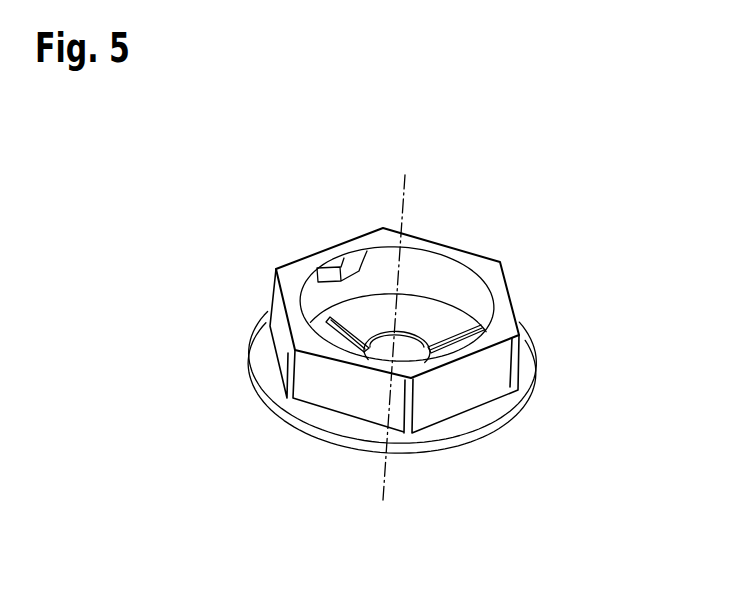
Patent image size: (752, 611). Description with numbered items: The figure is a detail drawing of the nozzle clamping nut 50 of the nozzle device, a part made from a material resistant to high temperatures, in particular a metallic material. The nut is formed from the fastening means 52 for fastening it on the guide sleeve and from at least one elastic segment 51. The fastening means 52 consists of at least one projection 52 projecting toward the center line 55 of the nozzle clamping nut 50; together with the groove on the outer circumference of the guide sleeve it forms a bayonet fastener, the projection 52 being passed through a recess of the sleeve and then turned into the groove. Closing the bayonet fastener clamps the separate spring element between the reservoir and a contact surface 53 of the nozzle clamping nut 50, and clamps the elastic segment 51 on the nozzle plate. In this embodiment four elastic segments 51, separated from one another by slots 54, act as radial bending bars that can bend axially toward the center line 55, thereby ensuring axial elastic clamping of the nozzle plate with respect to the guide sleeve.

The nozzle clamping nut 50 is at (410, 285).
The elastic segment 51 is at (422, 325).
The fastening means (projection) 52 is at (342, 235).
The contact surface 53 is at (548, 297).
The slots 54 is at (277, 320).
The center line 55 is at (428, 528).